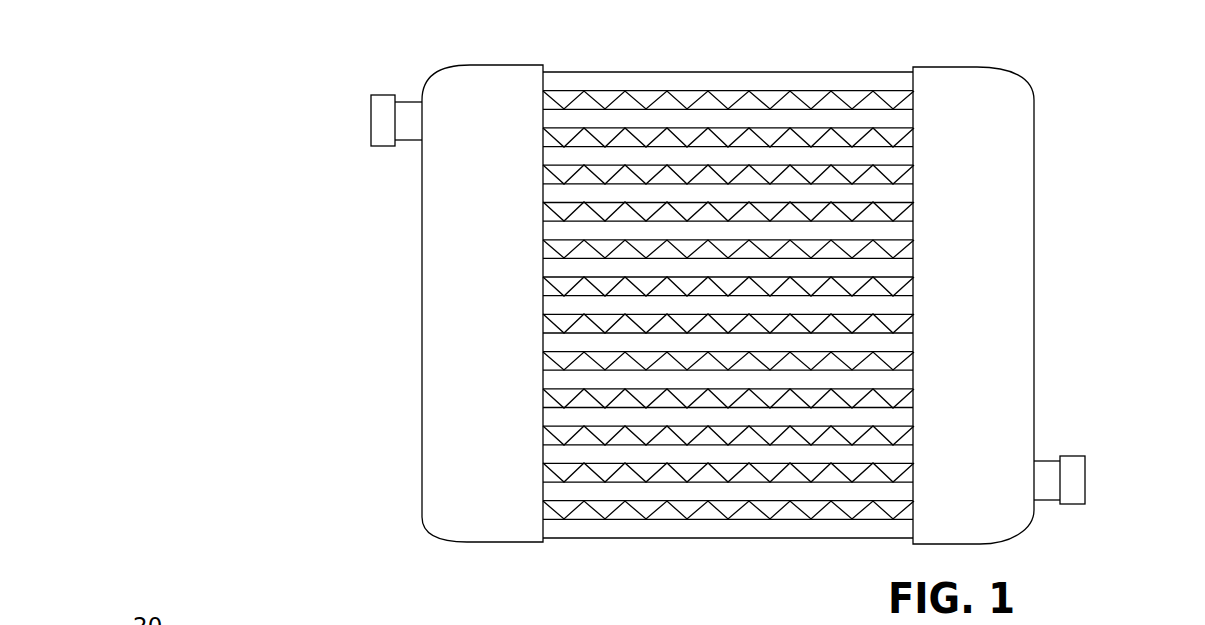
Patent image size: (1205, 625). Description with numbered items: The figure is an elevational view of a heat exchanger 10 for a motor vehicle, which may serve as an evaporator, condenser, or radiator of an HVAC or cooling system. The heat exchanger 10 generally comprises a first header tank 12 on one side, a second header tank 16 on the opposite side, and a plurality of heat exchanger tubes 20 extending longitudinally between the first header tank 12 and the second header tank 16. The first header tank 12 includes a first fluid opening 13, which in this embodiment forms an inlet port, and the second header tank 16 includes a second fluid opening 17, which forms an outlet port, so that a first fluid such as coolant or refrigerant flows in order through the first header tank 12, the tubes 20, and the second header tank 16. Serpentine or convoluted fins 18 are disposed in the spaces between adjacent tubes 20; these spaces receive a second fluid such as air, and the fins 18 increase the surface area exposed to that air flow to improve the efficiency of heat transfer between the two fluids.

The heat exchanger 10 is at (284, 205).
The first header tank 12 is at (445, 397).
The first fluid opening 13 is at (385, 120).
The second header tank 16 is at (1012, 398).
The second fluid opening 17 is at (1073, 483).
The serpentine fins 18 is at (618, 520).
The heat exchanger tubes 20 is at (813, 457).